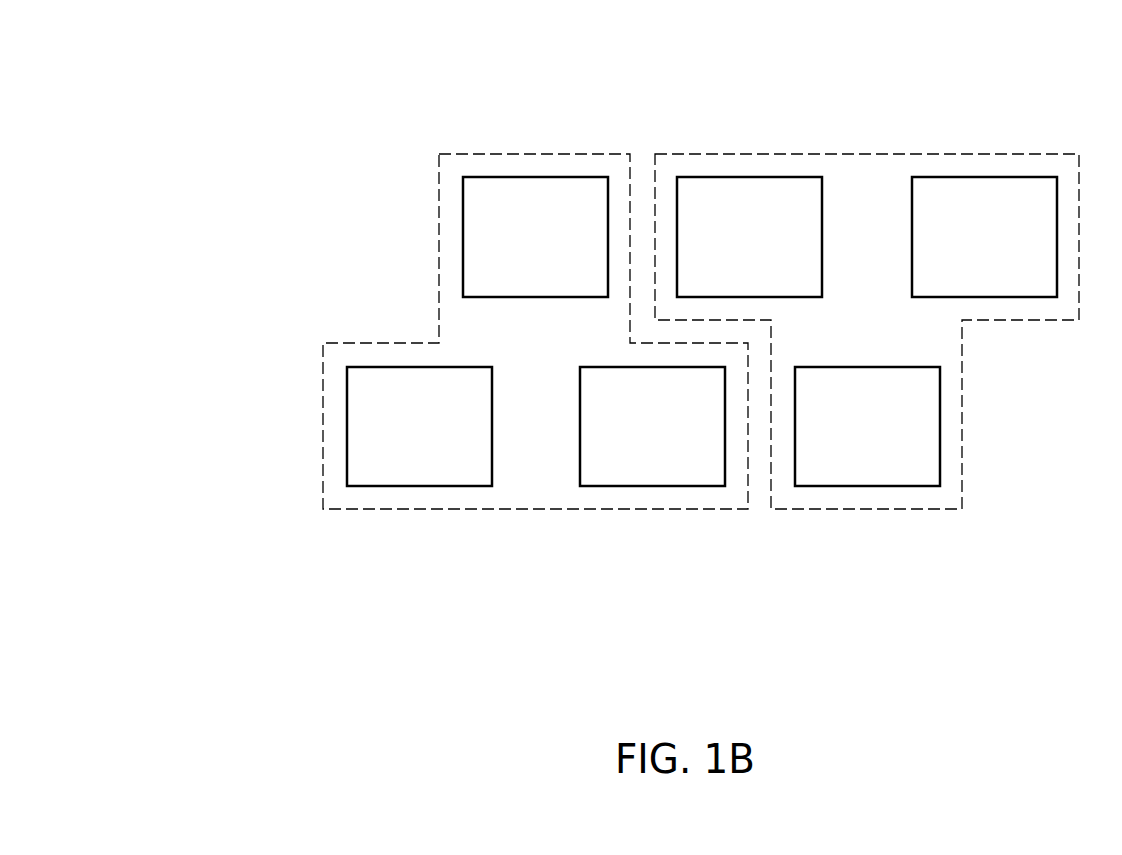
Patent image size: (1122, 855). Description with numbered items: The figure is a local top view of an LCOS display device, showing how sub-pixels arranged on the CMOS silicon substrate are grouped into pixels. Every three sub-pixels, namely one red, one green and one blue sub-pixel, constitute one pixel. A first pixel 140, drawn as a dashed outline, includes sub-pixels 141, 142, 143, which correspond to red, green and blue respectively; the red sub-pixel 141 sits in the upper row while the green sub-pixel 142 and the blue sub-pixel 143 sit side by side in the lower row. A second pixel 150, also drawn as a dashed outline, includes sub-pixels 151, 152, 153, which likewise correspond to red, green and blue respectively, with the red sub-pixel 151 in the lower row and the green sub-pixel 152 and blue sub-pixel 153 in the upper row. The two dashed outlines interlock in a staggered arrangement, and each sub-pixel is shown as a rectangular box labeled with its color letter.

The pixel 140 is at (323, 422).
The sub-pixel 141 is at (535, 177).
The sub-pixel 142 is at (420, 486).
The sub-pixel 143 is at (653, 486).
The pixel 150 is at (925, 509).
The sub-pixel 151 is at (867, 486).
The sub-pixel 152 is at (748, 177).
The sub-pixel 153 is at (985, 177).